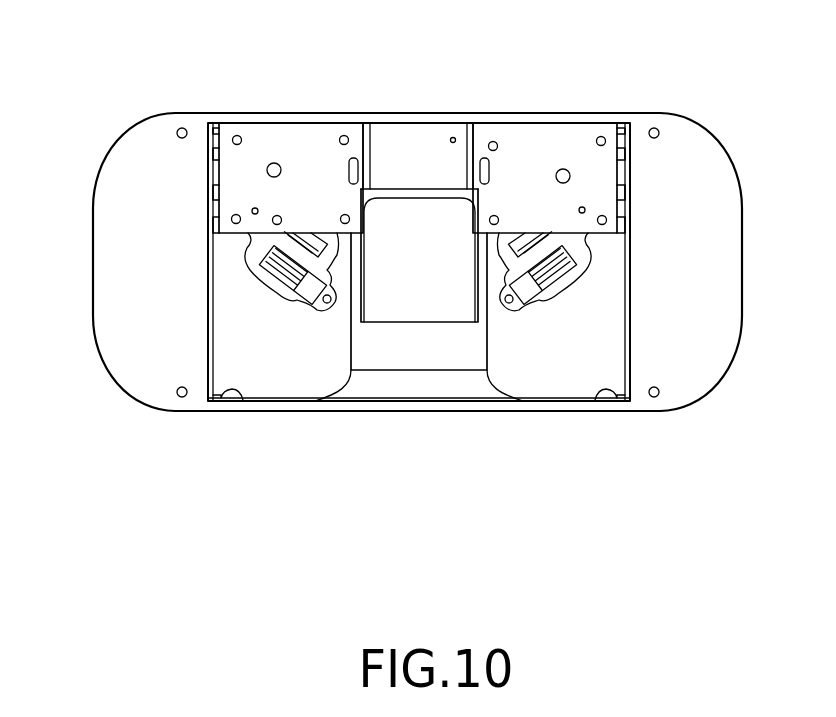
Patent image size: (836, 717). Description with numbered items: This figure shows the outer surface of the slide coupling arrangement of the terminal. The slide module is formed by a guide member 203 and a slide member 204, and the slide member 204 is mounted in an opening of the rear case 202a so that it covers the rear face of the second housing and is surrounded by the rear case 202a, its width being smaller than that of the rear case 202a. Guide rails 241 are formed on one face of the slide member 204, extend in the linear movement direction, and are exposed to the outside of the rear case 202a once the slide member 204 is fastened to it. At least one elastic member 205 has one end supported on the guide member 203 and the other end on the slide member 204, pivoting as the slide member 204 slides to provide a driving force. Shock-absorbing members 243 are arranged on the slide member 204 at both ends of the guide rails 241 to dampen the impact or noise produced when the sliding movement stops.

The rear case 202a is at (721, 138).
The guide member 203 is at (410, 133).
The slide member 204 is at (421, 391).
The elastic member 205 is at (240, 259).
The guide rails 241 is at (208, 342).
The shock-absorbing members 243 is at (244, 401).